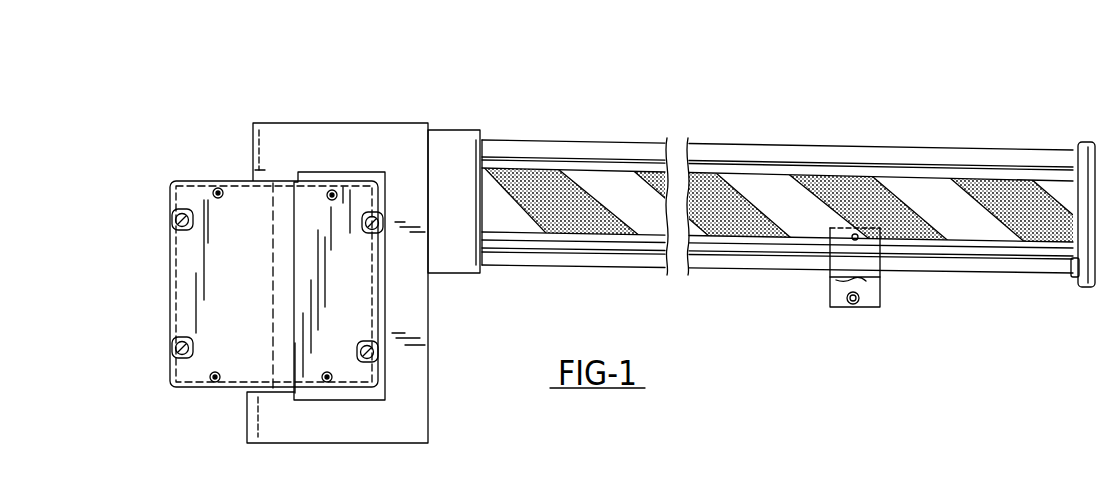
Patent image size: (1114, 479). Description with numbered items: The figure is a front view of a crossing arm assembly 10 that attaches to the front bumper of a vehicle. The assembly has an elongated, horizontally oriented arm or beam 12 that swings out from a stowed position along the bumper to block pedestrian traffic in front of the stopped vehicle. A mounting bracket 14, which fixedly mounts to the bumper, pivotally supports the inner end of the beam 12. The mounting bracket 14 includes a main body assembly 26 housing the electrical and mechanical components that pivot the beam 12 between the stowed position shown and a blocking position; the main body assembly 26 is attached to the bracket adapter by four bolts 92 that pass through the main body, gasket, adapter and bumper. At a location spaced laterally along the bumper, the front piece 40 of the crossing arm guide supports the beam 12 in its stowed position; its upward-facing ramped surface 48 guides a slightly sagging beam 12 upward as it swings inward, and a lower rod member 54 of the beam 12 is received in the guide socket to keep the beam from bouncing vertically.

The crossing arm assembly 10 is at (603, 222).
The arm or beam 12 is at (782, 146).
The mounting bracket 14 is at (170, 203).
The main body assembly 26 is at (183, 274).
The front piece of the crossing arm guide 40 is at (890, 295).
The ramped surface 48 is at (877, 278).
The lower rod member 54 is at (1033, 263).
The bolts 92 is at (190, 225).